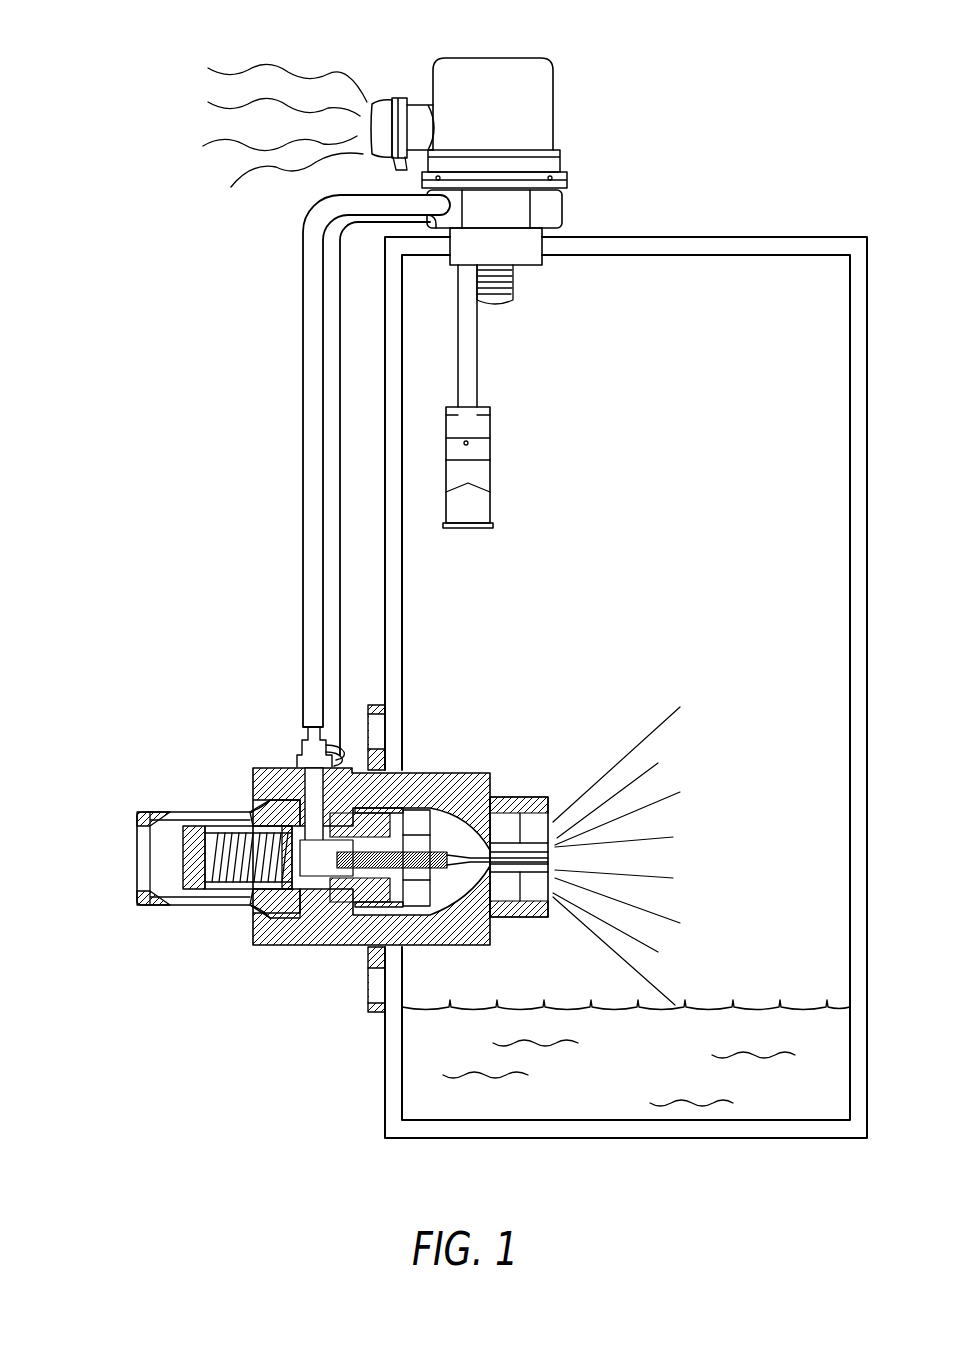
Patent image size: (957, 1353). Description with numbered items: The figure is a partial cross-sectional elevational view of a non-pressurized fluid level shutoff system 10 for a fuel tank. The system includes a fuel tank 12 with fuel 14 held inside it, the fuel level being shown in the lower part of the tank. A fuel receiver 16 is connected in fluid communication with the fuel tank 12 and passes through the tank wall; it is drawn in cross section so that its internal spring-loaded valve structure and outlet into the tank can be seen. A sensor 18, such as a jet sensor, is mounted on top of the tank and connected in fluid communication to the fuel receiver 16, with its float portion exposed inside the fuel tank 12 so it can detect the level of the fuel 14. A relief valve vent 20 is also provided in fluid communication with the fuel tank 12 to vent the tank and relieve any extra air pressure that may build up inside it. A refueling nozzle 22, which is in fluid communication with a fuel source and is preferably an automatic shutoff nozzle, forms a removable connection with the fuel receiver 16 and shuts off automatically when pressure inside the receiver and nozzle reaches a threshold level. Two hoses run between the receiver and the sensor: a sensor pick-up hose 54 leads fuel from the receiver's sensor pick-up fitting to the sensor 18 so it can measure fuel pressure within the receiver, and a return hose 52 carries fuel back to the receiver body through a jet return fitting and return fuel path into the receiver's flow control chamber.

The non-pressurized fluid level shutoff system 10 is at (144, 240).
The fuel tank 12 is at (724, 155).
The fuel 14 is at (751, 1030).
The fuel receiver 16 is at (322, 953).
The sensor 18 is at (522, 385).
The relief valve vent 20 is at (350, 50).
The refueling nozzle 22 is at (150, 745).
The return hose 52 is at (303, 486).
The sensor pick-up hose 54 is at (340, 545).